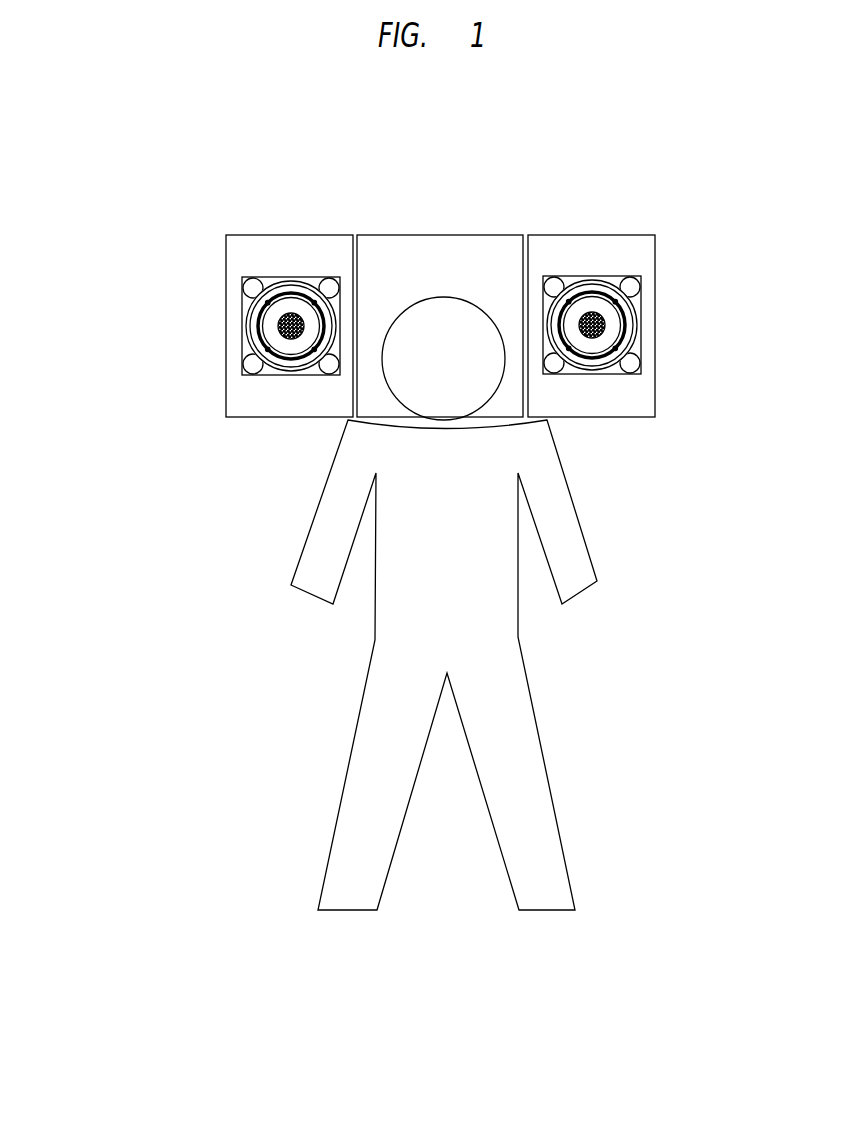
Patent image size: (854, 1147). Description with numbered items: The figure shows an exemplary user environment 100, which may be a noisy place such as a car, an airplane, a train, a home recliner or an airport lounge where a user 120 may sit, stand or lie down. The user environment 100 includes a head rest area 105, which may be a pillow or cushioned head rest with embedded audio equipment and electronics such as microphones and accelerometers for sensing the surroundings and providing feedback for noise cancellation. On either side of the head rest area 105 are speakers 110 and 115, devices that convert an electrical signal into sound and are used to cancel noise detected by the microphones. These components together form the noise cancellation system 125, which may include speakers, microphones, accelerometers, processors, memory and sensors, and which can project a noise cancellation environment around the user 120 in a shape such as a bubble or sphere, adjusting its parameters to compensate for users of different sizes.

The user environment 100 is at (100, 175).
The head rest area 105 is at (392, 234).
The speaker 110 is at (292, 278).
The speaker 115 is at (592, 276).
The user 120 is at (298, 565).
The noise cancellation system 125 is at (675, 252).